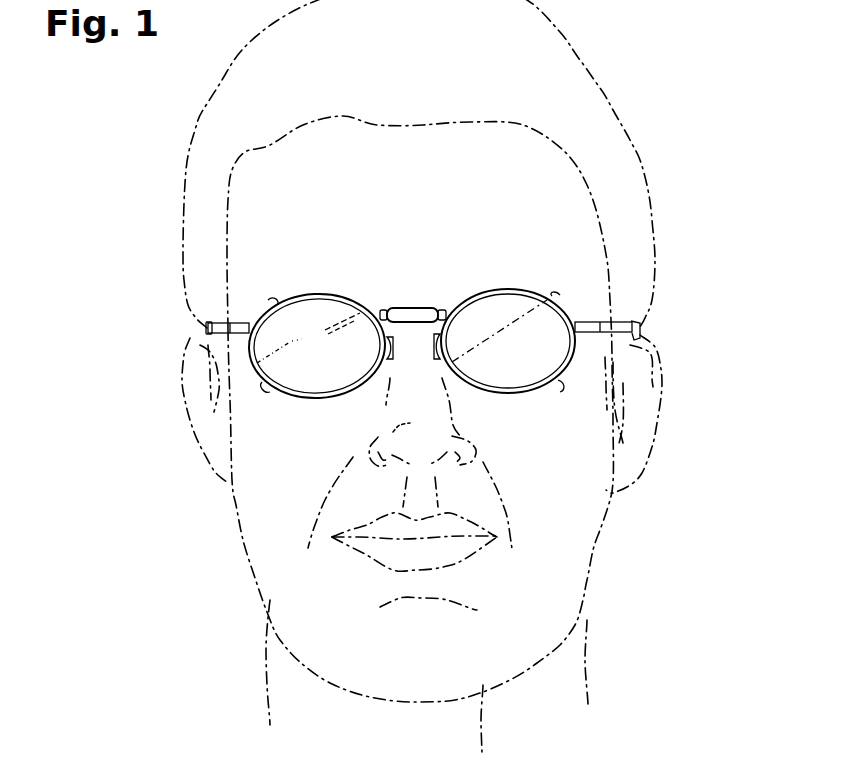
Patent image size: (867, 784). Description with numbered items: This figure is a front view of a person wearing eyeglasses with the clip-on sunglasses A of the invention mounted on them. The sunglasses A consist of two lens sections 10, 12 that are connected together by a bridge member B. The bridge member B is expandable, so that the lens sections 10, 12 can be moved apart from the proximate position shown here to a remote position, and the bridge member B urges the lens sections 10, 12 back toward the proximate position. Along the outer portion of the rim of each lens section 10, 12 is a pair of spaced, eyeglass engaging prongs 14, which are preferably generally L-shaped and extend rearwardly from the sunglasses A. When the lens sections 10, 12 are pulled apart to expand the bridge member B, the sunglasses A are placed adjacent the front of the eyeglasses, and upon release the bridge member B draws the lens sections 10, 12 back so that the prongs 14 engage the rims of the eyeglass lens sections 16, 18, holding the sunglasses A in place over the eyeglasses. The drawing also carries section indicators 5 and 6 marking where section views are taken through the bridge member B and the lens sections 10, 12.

The lens section 10 is at (345, 374).
The lens section 12 is at (543, 367).
The eyeglass engaging prongs 14 is at (270, 304).
The lens section of eyeglasses 16 is at (307, 283).
The lens section of eyeglasses 18 is at (527, 283).
The section line 5- 5 is at (420, 373).
The section line 6- 6 is at (388, 298).
The clip-on sunglasses A is at (318, 403).
The bridge member B is at (425, 321).